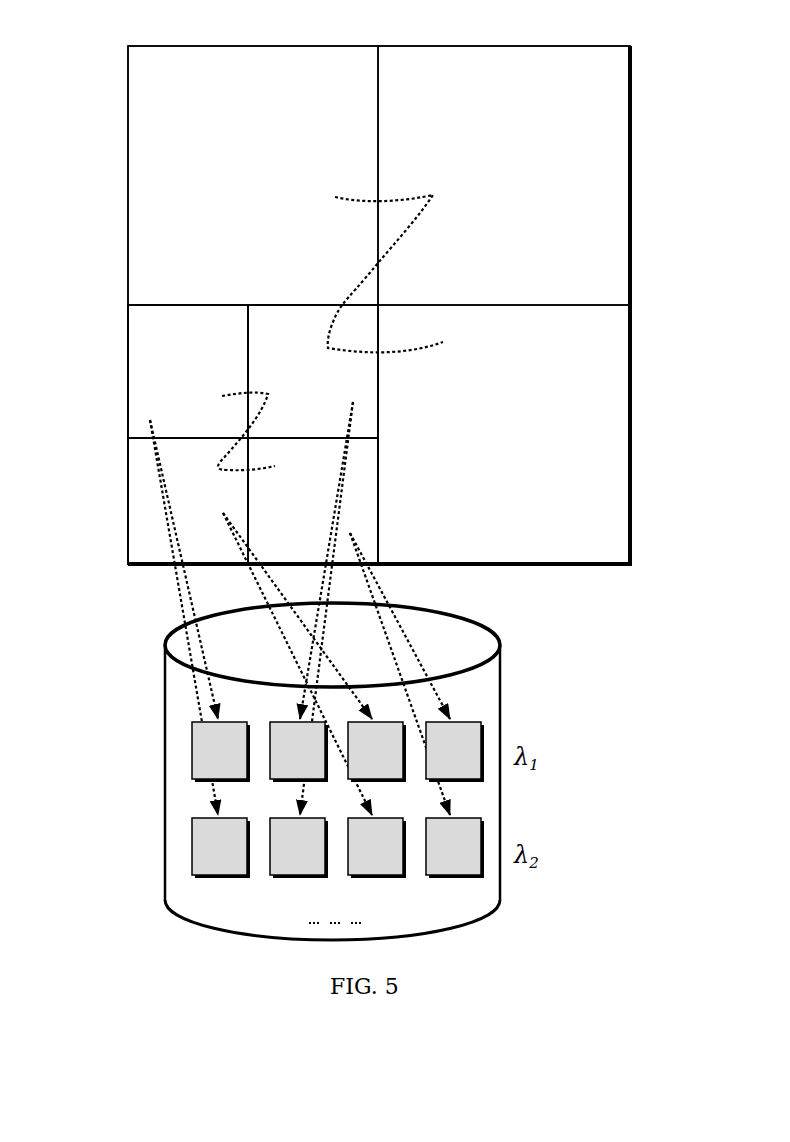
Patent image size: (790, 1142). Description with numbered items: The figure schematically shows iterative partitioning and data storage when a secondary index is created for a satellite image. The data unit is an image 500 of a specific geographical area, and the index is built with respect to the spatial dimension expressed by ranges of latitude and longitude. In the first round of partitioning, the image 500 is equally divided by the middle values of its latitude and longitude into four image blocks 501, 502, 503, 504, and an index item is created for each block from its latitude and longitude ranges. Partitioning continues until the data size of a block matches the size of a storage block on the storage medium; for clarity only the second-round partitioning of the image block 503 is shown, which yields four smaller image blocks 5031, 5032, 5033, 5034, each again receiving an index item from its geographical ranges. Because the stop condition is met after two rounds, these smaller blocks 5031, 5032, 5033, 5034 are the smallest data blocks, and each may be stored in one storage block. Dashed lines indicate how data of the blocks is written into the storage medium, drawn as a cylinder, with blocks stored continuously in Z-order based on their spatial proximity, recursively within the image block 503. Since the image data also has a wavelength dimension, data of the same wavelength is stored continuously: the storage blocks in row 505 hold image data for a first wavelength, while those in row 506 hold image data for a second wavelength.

The image 500 is at (103, 54).
The image block 501 is at (128, 183).
The image block 502 is at (630, 176).
The image block 503 is at (218, 403).
The image block 5031 is at (178, 313).
The image block 5032 is at (303, 313).
The image block 5033 is at (178, 447).
The image block 5034 is at (303, 447).
The image block 504 is at (632, 428).
The row of storage blocks 505 is at (181, 748).
The row of storage blocks 506 is at (181, 846).